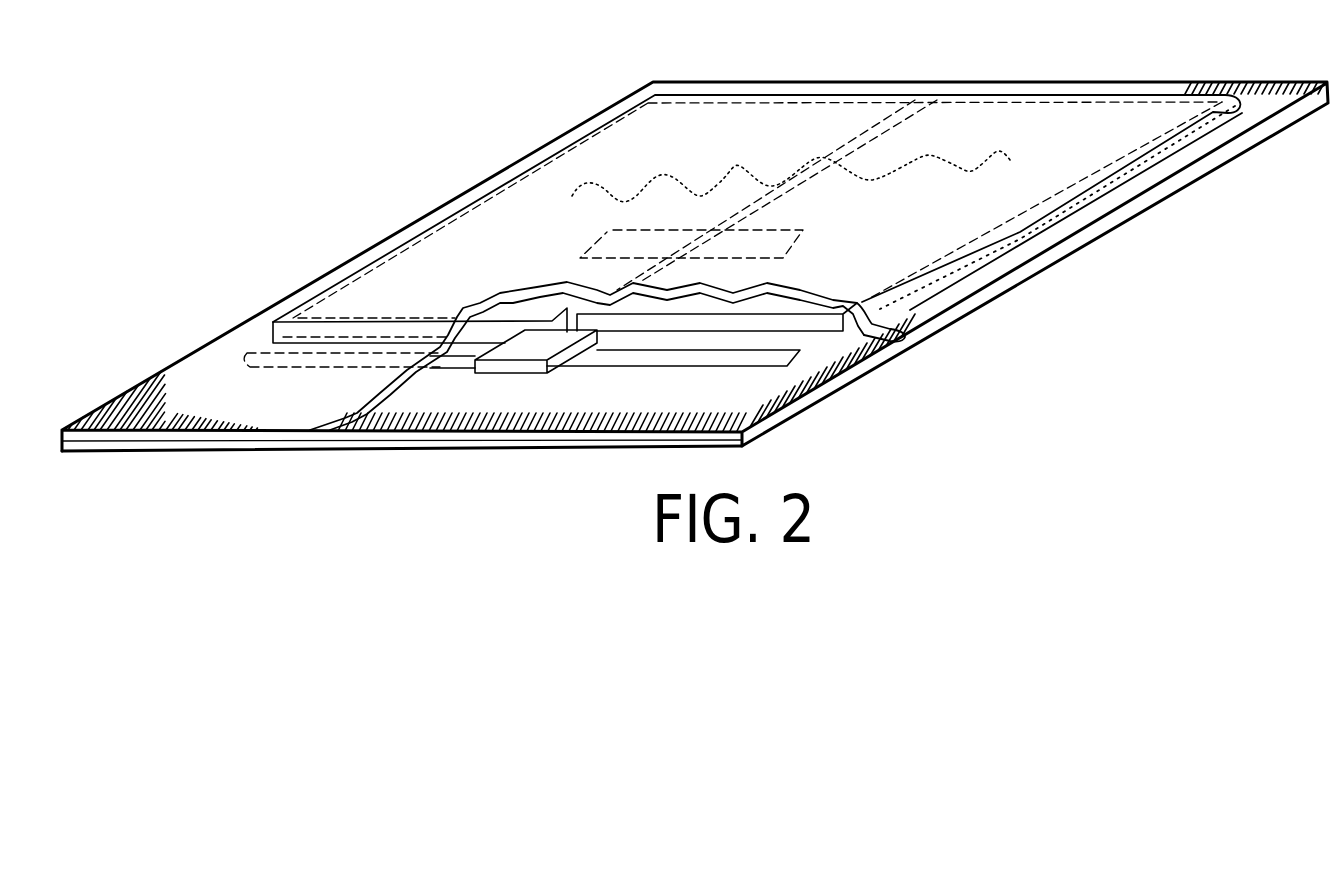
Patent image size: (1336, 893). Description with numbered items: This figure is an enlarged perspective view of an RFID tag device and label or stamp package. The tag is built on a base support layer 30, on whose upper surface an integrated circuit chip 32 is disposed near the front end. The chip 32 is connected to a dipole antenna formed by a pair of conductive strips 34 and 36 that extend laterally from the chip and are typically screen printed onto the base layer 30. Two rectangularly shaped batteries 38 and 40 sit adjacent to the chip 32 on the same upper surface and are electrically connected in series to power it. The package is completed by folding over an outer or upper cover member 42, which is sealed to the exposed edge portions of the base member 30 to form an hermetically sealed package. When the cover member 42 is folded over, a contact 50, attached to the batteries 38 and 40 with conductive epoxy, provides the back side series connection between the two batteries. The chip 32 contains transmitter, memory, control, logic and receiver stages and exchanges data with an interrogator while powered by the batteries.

The base support layer 30 is at (872, 362).
The integrated circuit chip 32 is at (517, 368).
The conductive strip 34 is at (653, 358).
The conductive strip 36 is at (453, 360).
The rectangularly shaped battery 38 is at (723, 147).
The rectangularly shaped battery 40 is at (1003, 147).
The outer or upper cover member 42 is at (87, 430).
The contact 50 is at (609, 252).